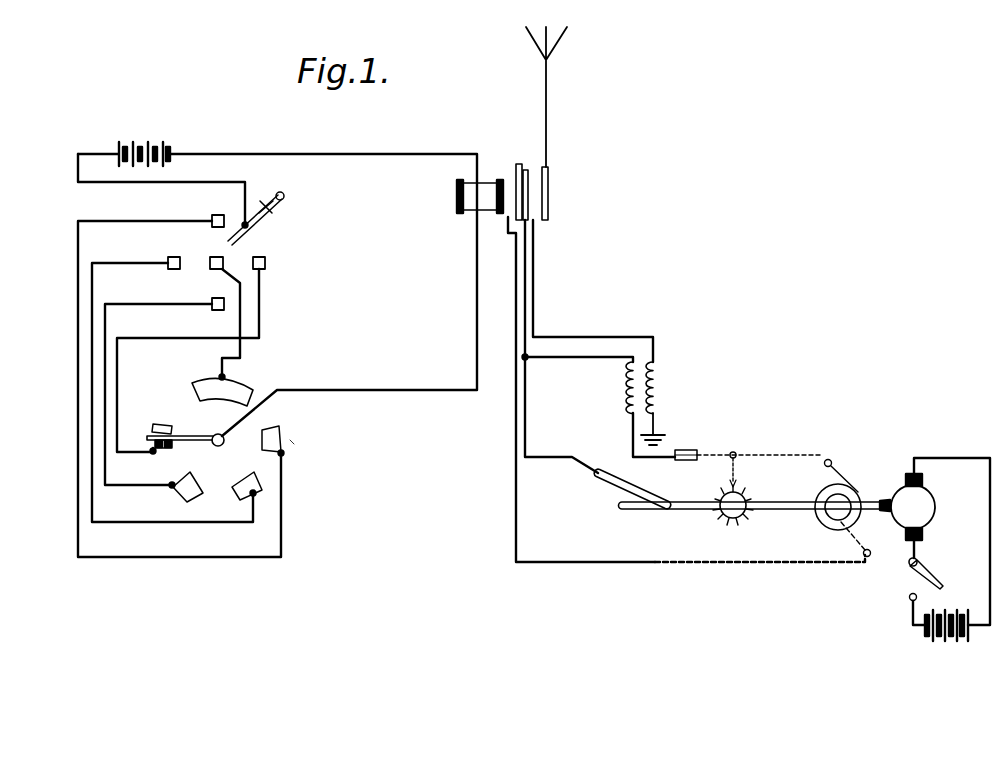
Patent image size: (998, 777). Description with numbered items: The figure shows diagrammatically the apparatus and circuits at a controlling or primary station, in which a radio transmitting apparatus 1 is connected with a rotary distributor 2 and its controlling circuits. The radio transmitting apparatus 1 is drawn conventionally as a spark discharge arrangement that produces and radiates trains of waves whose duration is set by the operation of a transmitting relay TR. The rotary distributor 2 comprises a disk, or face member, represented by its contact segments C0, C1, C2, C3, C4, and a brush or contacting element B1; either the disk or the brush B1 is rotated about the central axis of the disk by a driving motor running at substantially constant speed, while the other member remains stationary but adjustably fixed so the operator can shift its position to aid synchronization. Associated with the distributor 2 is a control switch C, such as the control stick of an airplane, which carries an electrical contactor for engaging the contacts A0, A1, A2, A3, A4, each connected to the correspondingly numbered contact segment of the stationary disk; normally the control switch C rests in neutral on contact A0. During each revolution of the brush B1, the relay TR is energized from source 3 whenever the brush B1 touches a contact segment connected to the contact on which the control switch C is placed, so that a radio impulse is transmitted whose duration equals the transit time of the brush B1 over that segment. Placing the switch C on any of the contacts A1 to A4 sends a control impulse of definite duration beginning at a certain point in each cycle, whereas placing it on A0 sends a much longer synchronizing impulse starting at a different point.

The source 3 is at (277, 277).
The transmitting relay TR is at (480, 196).
The control switch C is at (272, 202).
The contact A1 is at (218, 215).
The contact A2 is at (172, 378).
The contact A0 is at (221, 307).
The contact A4 is at (196, 343).
The contact A3 is at (167, 380).
The contact segment C0 is at (200, 385).
The brush B1 is at (214, 434).
The contact segment C4 is at (163, 428).
The contact segment C1 is at (270, 432).
The contact segment C2 is at (244, 482).
The contact segment C3 is at (178, 480).
The rotary distributor 2 is at (303, 443).
The radio transmitting apparatus 1 is at (749, 334).